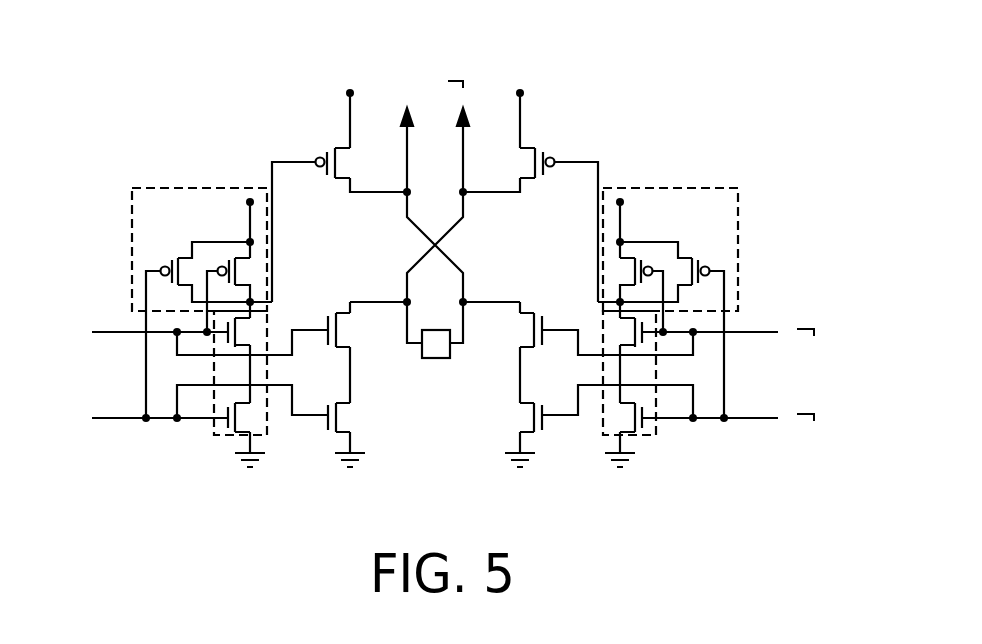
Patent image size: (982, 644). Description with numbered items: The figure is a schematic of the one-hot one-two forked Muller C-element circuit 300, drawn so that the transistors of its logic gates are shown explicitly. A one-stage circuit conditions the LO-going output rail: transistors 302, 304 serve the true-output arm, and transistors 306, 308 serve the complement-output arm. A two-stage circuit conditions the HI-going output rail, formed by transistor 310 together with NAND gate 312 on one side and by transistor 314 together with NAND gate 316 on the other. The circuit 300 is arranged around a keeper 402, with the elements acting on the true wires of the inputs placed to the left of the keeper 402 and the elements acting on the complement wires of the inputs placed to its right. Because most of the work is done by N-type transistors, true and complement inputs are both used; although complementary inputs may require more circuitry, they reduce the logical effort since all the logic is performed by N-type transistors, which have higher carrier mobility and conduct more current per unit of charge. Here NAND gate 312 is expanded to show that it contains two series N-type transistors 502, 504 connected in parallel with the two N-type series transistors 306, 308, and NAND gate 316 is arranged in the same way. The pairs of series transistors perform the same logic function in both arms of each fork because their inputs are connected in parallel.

The circuit 300 is at (657, 82).
The transistor 302 is at (542, 322).
The transistor 304 is at (547, 422).
The transistor 306 is at (327, 322).
The transistor 308 is at (328, 424).
The transistor 310 is at (316, 158).
The NAND gate 312 is at (178, 187).
The transistor 314 is at (554, 158).
The NAND gate 316 is at (740, 248).
The keeper 402 is at (450, 350).
The N-type transistor 502 is at (241, 345).
The N-type transistor 504 is at (246, 423).